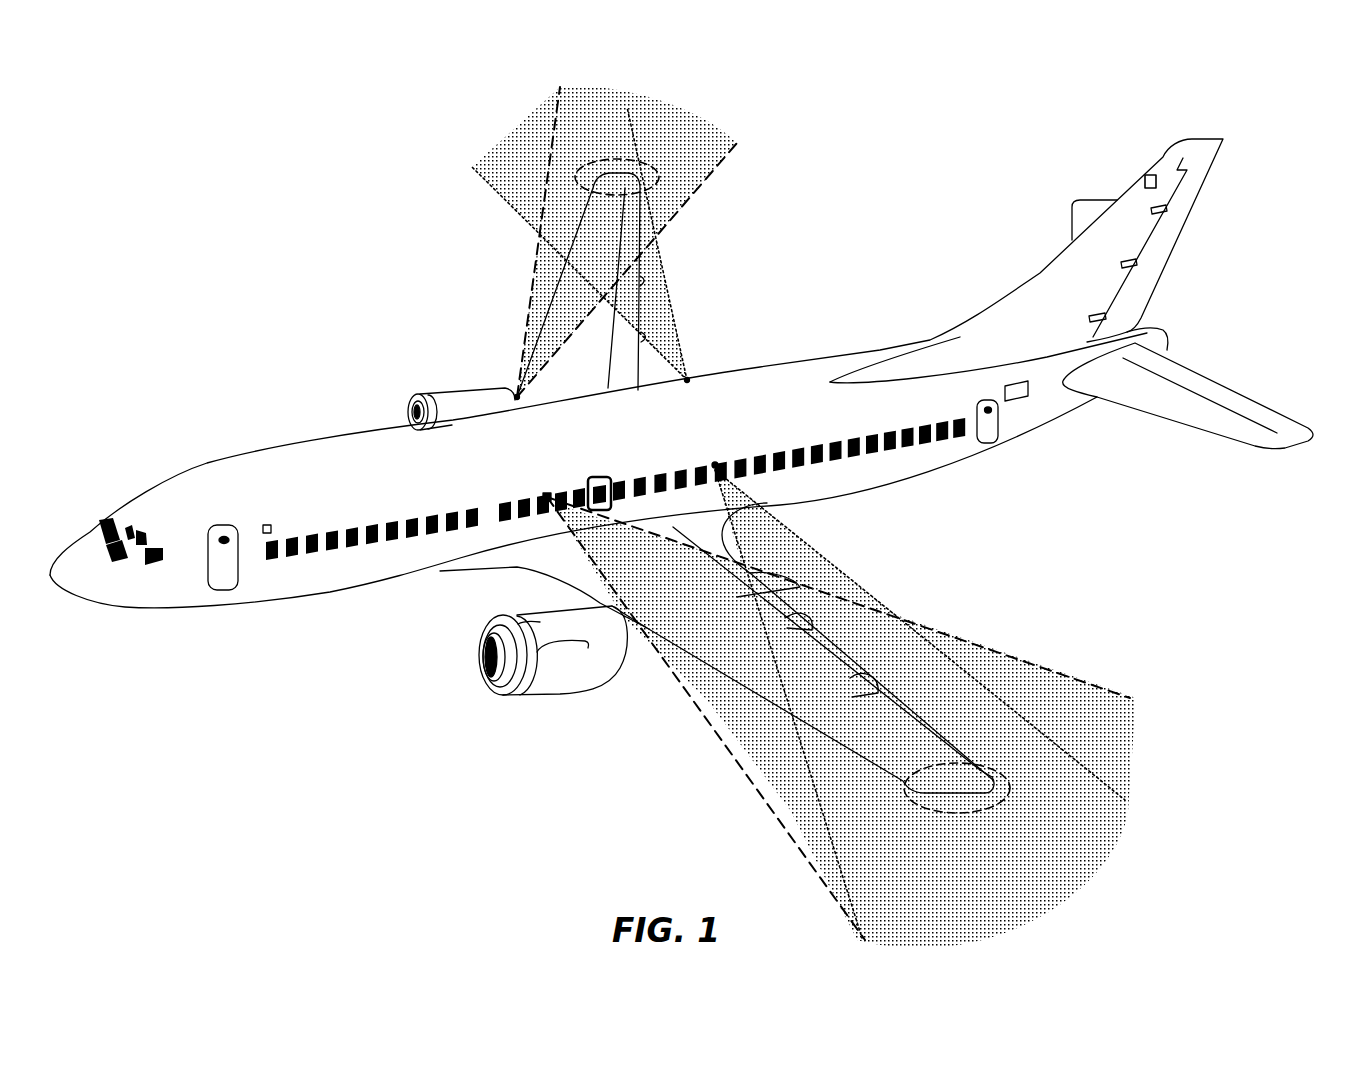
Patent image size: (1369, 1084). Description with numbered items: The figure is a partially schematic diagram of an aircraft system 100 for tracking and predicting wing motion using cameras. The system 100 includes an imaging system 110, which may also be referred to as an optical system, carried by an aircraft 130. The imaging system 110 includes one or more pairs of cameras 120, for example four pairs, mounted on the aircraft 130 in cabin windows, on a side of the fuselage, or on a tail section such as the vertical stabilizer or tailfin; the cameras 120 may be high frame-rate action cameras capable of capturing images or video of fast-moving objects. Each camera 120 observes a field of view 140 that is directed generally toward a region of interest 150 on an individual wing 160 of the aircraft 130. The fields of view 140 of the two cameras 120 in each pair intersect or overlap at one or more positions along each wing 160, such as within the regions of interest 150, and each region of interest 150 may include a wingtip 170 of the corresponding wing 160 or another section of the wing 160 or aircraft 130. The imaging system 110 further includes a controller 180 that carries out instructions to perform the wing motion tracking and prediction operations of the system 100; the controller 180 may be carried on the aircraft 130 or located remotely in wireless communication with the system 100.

The aircraft system 100 is at (1290, 168).
The imaging system 110 is at (399, 365).
The cameras 120 is at (1143, 178).
The aircraft 130 is at (172, 496).
The field of view 140 is at (660, 293).
The region of interest 150 is at (601, 160).
The wings 160 is at (560, 272).
The wingtip 170 is at (626, 165).
The controller 180 is at (1020, 402).